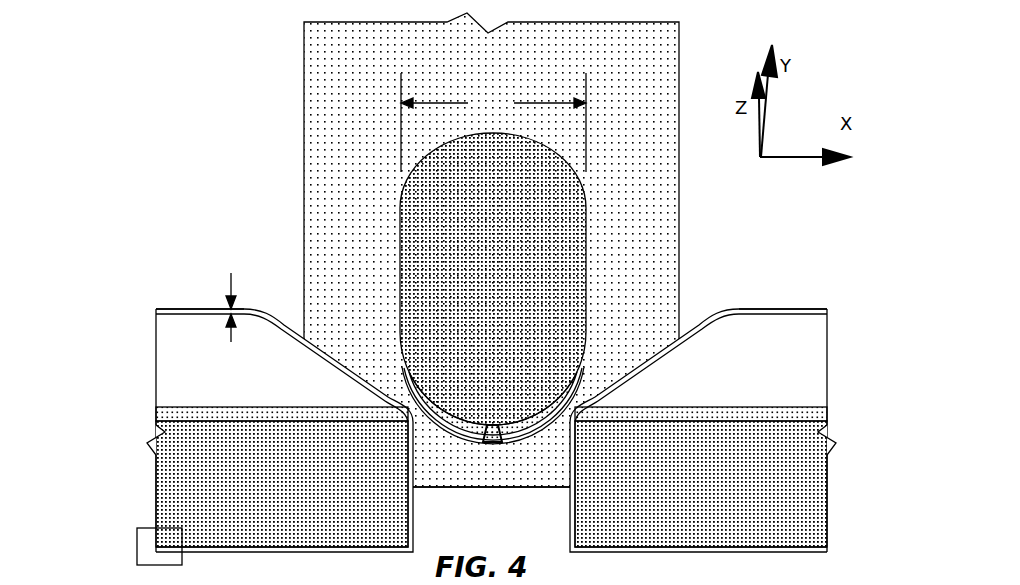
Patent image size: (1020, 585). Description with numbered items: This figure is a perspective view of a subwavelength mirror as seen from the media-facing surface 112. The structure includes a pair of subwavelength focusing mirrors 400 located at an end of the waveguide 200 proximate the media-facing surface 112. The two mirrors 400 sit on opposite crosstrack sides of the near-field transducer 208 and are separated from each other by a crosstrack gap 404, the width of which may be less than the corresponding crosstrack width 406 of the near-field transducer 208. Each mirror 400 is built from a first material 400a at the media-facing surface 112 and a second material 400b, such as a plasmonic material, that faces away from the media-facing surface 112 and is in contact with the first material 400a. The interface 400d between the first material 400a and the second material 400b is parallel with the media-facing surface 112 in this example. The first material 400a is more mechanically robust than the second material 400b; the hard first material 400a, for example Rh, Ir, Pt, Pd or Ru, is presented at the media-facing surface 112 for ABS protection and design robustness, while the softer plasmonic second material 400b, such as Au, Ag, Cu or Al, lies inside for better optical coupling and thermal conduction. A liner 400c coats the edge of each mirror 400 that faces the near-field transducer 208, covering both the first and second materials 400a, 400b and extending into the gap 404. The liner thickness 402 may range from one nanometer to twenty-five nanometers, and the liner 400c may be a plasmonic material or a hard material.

The waveguide 200 is at (312, 47).
The near-field transducer 208 is at (352, 223).
The subwavelength focusing mirrors 400 is at (494, 404).
The first material 400a is at (164, 468).
The second material 400b is at (157, 380).
The liner 400c is at (187, 309).
The interface 400d is at (152, 432).
The liner thickness 402 is at (236, 293).
The crosstrack gap 404 is at (510, 524).
The crosstrack width 406 is at (493, 122).
The media-facing surface 112 is at (137, 556).